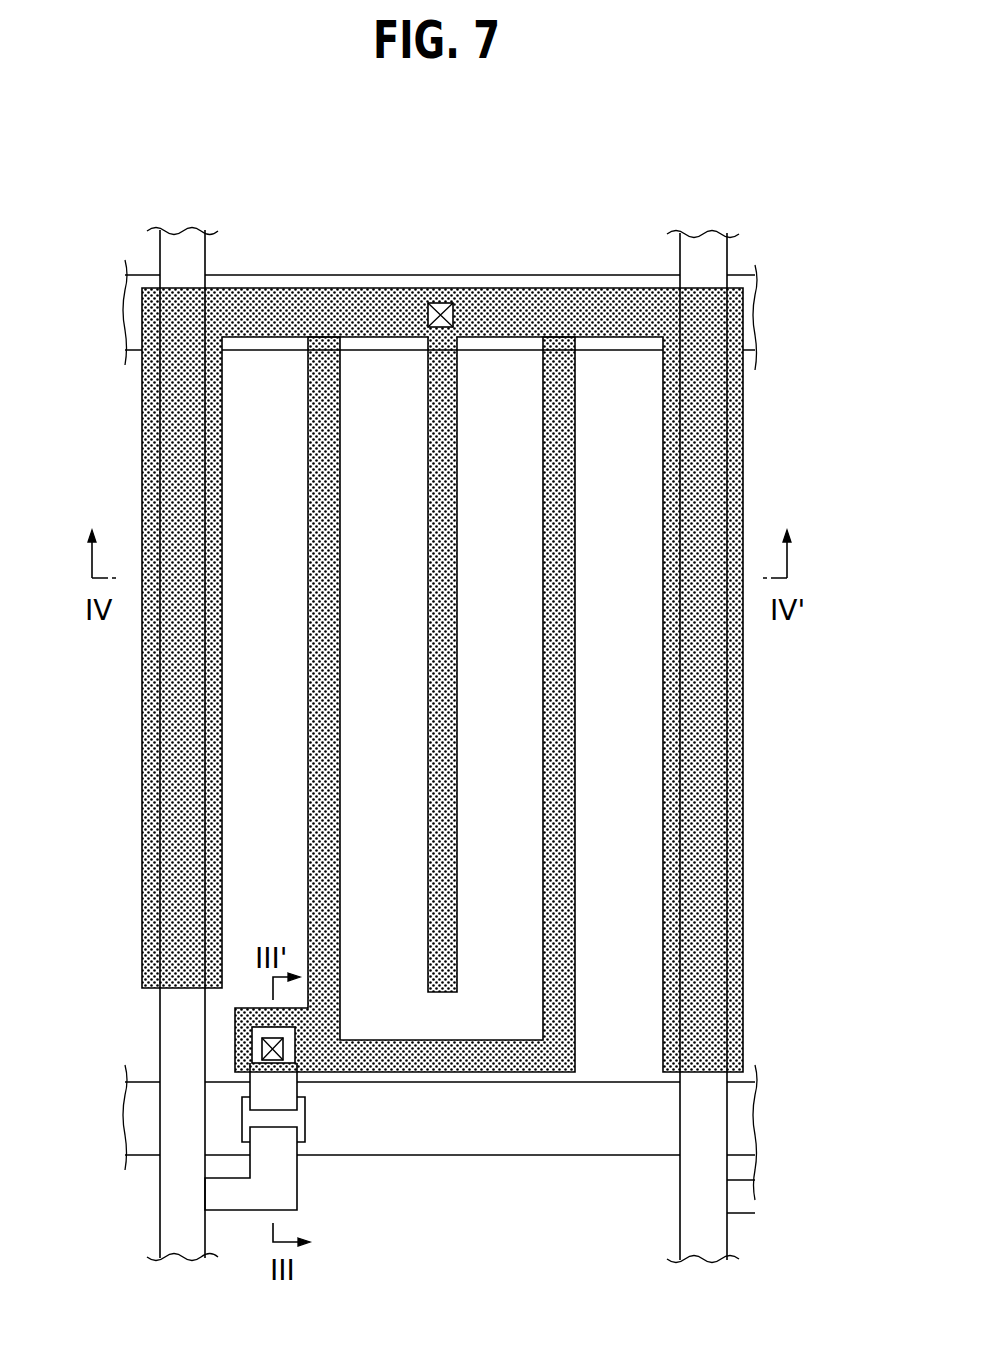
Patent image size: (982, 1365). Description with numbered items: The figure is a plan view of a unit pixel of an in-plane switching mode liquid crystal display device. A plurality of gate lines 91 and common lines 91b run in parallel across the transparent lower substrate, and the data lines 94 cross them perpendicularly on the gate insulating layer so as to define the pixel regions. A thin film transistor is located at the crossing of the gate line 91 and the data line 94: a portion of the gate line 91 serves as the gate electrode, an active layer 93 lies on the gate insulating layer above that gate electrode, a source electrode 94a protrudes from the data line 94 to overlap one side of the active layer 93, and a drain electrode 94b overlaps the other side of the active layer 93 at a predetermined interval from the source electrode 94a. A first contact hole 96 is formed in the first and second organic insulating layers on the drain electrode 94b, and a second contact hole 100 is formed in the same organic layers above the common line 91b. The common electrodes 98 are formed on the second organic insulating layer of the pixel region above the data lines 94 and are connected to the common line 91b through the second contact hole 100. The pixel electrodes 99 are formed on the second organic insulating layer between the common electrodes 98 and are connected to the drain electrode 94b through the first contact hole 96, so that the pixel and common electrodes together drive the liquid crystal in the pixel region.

The gate line 91 is at (503, 1148).
The common line 91b is at (288, 273).
The active layer 93 is at (305, 1120).
The data line 94 is at (178, 893).
The source electrode 94a is at (262, 1195).
The drain electrode 94b is at (240, 1022).
The first contact hole 96 is at (262, 1046).
The common electrode 98 is at (670, 695).
The pixel electrode 99 is at (320, 844).
The second contact hole 100 is at (442, 300).